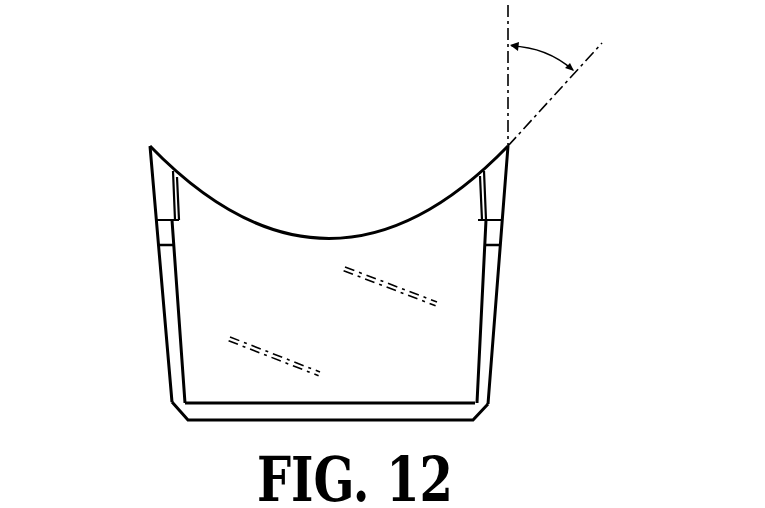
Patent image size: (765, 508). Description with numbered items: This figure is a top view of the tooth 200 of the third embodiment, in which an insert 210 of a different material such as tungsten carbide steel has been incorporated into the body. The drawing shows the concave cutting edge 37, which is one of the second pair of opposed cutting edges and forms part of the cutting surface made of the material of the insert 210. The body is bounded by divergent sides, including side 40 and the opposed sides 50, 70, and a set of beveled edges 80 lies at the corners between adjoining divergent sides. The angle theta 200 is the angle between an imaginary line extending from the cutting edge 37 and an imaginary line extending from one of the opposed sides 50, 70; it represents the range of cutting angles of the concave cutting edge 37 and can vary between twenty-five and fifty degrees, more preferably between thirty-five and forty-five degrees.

The opposed cutting edge 37 is at (461, 194).
The divergent side 40 is at (380, 348).
The divergent side 50 is at (500, 265).
The divergent side 70 is at (158, 263).
The set of beveled edges 80 is at (168, 320).
The insert 210 is at (150, 175).
The tooth 200 is at (555, 75).